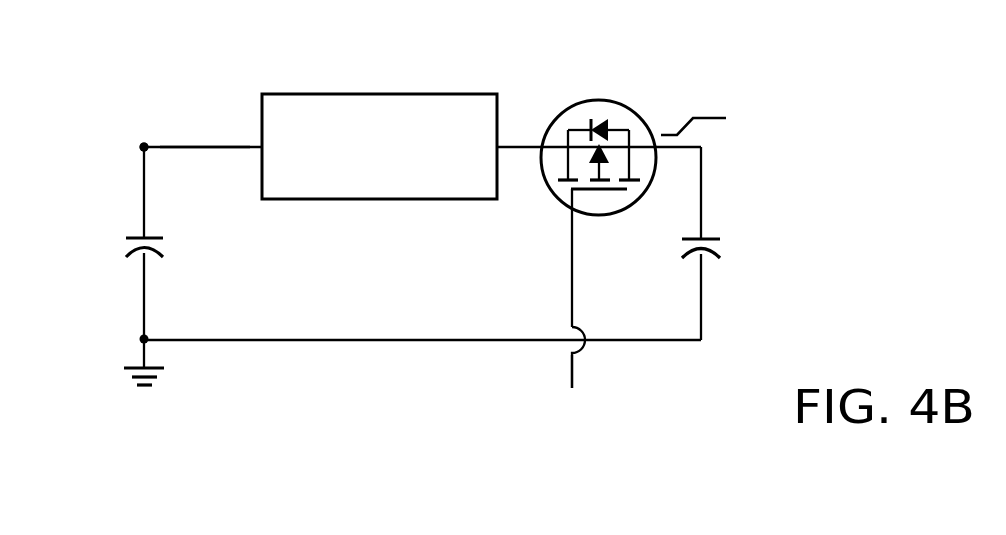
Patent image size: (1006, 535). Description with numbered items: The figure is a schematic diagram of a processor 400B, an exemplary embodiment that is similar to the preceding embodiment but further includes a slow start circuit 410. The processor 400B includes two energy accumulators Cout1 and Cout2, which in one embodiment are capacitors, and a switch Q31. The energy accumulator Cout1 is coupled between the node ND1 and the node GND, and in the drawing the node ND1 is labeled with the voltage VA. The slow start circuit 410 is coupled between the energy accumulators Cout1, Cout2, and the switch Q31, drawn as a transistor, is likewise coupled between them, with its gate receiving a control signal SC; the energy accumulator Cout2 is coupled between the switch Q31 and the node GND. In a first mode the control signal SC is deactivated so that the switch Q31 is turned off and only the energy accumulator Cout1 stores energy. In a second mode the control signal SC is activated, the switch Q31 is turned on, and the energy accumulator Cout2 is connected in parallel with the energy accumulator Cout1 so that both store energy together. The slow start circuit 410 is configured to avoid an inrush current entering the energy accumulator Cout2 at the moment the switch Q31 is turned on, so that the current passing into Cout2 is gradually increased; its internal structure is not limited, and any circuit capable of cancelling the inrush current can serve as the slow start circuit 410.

The slow start circuit 410 is at (403, 179).
The processor 400B is at (798, 113).
The switch Q31 is at (553, 197).
The energy accumulator Cout1 is at (166, 243).
The energy accumulator Cout2 is at (723, 244).
The node ND1 is at (140, 148).
The voltage at node ND1 VA is at (205, 127).
The control signal SC is at (572, 390).
The node GND is at (144, 396).